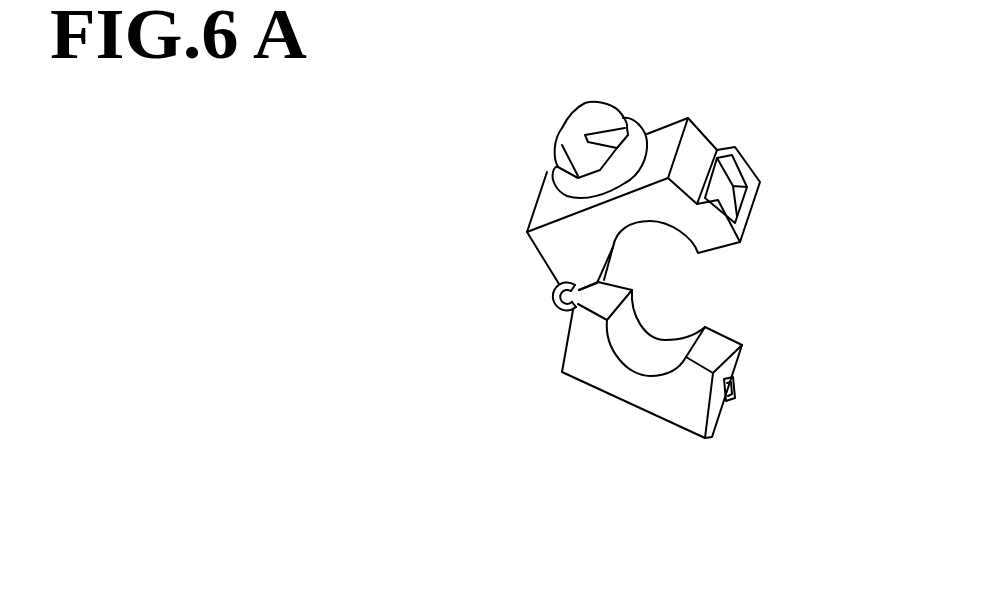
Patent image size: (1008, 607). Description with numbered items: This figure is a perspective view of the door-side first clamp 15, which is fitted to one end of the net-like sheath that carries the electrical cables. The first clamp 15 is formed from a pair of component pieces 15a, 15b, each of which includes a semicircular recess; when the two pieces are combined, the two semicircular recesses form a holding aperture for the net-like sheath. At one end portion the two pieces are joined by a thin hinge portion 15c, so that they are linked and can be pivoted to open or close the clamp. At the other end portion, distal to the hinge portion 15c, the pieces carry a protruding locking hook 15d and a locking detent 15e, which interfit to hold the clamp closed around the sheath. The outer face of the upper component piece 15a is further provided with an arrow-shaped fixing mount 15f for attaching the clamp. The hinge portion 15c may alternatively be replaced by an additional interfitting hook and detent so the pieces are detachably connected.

The first clamp 15 is at (533, 153).
The component piece 15a is at (698, 148).
The component piece 15b is at (607, 375).
The hinge portion 15c is at (553, 293).
The locking hook 15d is at (759, 181).
The locking detent 15e is at (736, 386).
The fixing mount 15f is at (590, 116).